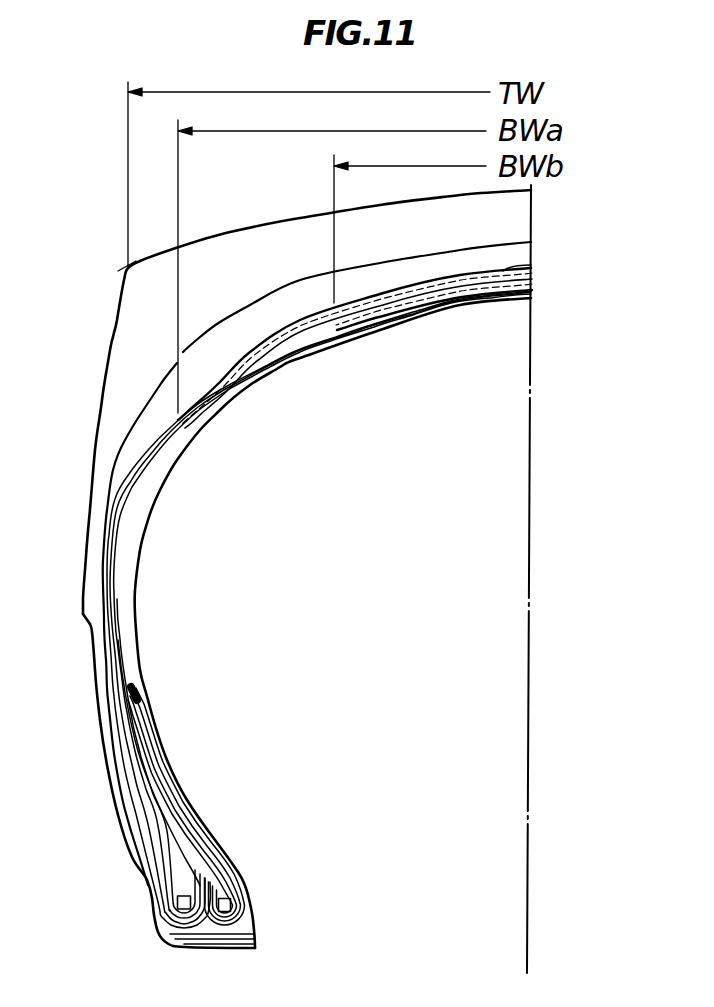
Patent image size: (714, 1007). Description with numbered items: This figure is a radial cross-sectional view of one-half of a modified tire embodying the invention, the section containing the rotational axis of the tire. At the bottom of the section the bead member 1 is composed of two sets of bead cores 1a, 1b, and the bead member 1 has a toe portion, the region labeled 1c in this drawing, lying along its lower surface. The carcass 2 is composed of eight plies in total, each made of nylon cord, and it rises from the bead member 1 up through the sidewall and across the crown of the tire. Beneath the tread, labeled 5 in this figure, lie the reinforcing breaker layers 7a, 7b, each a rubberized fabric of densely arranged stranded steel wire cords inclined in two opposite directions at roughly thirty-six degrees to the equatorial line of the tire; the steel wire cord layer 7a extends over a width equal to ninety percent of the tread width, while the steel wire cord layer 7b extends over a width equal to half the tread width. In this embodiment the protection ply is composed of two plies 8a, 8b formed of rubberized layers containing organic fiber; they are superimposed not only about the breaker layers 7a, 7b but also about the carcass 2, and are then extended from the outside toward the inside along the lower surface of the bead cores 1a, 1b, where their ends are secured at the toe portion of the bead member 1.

The bead member 1 is at (211, 863).
The bead core 1a is at (218, 920).
The bead core 1b is at (182, 895).
The bead base 1c is at (253, 933).
The carcass ply 2 is at (150, 492).
The tread 5 is at (254, 241).
The steel wire cord layer 7a is at (270, 355).
The steel wire cord layer 7b is at (503, 268).
The protection ply 8a is at (298, 331).
The protection ply 8b is at (317, 303).